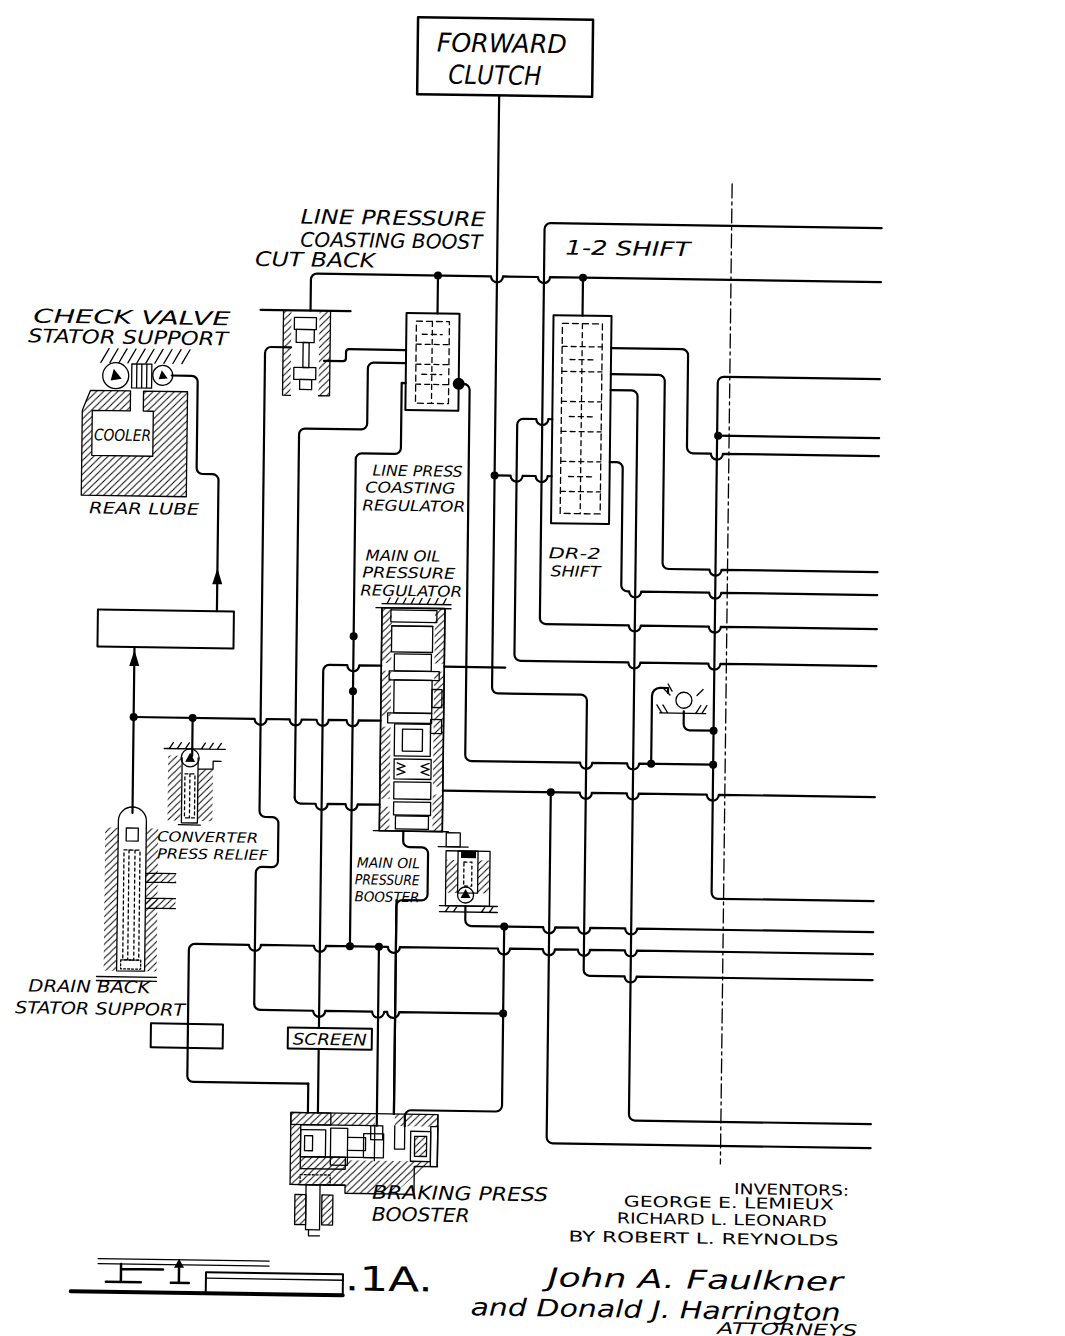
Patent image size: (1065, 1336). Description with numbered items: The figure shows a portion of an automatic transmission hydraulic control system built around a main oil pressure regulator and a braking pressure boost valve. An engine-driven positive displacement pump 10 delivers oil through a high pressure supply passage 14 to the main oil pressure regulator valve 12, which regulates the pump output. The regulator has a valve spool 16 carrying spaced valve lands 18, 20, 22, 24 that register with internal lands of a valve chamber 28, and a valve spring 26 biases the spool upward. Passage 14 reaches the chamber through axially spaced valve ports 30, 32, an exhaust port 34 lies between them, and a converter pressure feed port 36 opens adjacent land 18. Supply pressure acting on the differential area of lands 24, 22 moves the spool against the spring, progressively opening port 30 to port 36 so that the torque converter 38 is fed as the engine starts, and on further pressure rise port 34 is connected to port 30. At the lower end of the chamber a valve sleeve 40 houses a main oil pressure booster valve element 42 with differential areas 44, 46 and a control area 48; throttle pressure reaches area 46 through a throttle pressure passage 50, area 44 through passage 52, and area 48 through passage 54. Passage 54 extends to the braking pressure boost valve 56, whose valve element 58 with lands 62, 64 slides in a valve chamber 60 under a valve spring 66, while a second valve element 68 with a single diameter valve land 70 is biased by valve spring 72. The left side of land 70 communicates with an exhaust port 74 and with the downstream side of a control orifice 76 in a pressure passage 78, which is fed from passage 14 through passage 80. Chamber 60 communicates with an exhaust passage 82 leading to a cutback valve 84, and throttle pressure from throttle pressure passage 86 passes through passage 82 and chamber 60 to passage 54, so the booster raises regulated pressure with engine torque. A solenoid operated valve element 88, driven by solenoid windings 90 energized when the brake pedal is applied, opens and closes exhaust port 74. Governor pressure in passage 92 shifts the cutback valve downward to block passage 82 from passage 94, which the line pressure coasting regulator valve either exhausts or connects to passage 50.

The positive displacement pump 10 is at (155, 1052).
The main oil pressure regulator valve 12 is at (444, 692).
The high pressure supply passage 14 is at (353, 829).
The valve spool 16 is at (394, 665).
The valve land 18 is at (413, 697).
The valve land 20 is at (389, 678).
The valve land 22 is at (391, 640).
The valve land 24 is at (390, 617).
The valve spring 26 is at (395, 742).
The valve chamber 28 is at (388, 722).
The valve port 30 is at (442, 700).
The valve port 32 is at (411, 639).
The exhaust port 34 is at (430, 844).
The converter pressure feed port 36 is at (442, 730).
The torque converter 38 is at (146, 614).
The valve sleeve 40 is at (432, 818).
The main oil pressure booster valve element 42 is at (432, 800).
The differential area 44 is at (432, 778).
The differential area 46 is at (397, 806).
The control area 48 is at (436, 838).
The throttle pressure passage 50 is at (297, 481).
The passage 52 is at (513, 797).
The passage 54 is at (399, 930).
The braking pressure boost valve 56 is at (420, 1180).
The valve element 58 is at (417, 1125).
The valve chamber 60 is at (443, 1160).
The valve land 62 is at (380, 1112).
The valve land 64 is at (436, 1136).
The valve spring 66 is at (436, 1150).
The second valve element 68 is at (338, 1130).
The single diameter valve land 70 is at (306, 1145).
The valve spring 72 is at (306, 1165).
The exhaust port 74 is at (306, 1184).
The control orifice 76 is at (296, 1124).
The pressure passage 78 is at (318, 1115).
The passage 80 is at (384, 968).
The exhaust passage 82 is at (261, 402).
The cutback valve 84 is at (287, 360).
The throttle pressure passage 86 is at (516, 914).
The solenoid operated valve element 88 is at (320, 1234).
The solenoid windings 90 is at (301, 1218).
The passage 92 is at (306, 296).
The passage 94 is at (368, 362).